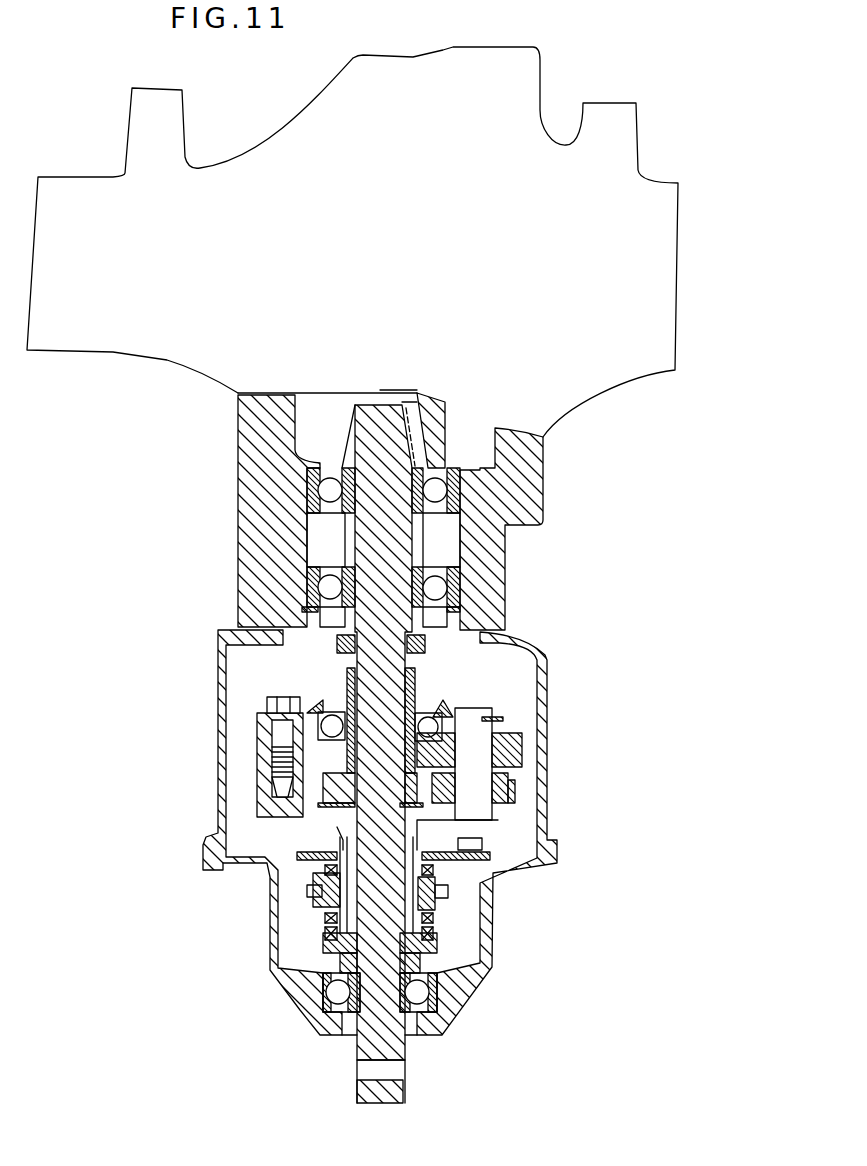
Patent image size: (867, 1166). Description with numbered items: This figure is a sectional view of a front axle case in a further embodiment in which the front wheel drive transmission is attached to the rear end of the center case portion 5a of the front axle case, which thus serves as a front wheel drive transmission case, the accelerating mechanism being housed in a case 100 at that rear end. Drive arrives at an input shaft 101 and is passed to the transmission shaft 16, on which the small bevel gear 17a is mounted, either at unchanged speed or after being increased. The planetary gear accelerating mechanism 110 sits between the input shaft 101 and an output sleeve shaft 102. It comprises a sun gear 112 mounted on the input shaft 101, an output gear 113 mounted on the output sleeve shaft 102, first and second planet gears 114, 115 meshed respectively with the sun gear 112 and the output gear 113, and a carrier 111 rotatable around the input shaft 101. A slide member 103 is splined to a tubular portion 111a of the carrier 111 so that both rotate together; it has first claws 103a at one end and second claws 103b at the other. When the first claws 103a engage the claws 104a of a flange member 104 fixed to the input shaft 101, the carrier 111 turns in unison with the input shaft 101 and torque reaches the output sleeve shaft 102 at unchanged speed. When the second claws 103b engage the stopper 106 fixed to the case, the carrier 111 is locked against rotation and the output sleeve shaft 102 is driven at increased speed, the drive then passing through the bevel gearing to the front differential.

The center case portion 5a is at (243, 466).
The transmission shaft 16 is at (383, 408).
The small bevel gear 17a is at (430, 403).
The gear housing 100 is at (266, 841).
The input shaft 101 is at (367, 1090).
The output sleeve shaft 102 is at (418, 683).
The slide member 103 is at (437, 905).
The first claws 103a is at (435, 918).
The second claws 103b is at (433, 870).
The flange member 104 is at (438, 980).
The claws 104a is at (433, 935).
The stopper 106 is at (305, 863).
The planetary gear accelerating mechanism 110 is at (517, 792).
The carrier 111 is at (260, 790).
The tubular portion 111a is at (335, 830).
The sun gear 112 is at (335, 790).
The output gear 113 is at (350, 752).
The first planet gear 114 is at (510, 782).
The second planet gear 115 is at (517, 747).